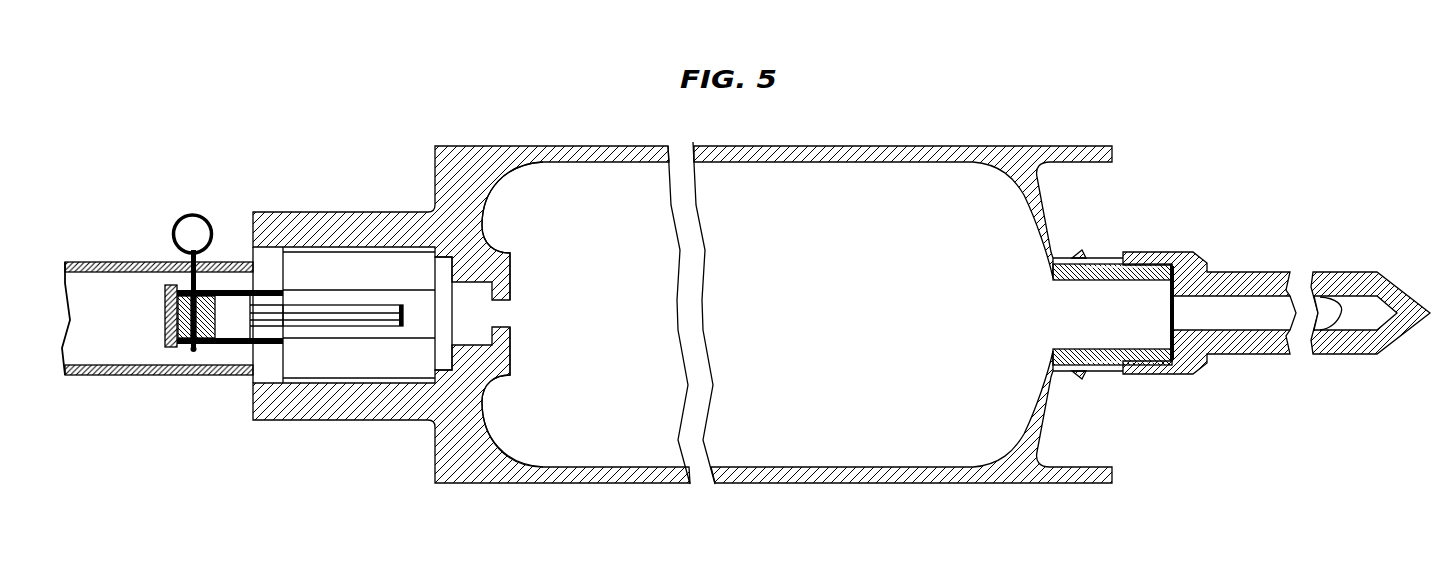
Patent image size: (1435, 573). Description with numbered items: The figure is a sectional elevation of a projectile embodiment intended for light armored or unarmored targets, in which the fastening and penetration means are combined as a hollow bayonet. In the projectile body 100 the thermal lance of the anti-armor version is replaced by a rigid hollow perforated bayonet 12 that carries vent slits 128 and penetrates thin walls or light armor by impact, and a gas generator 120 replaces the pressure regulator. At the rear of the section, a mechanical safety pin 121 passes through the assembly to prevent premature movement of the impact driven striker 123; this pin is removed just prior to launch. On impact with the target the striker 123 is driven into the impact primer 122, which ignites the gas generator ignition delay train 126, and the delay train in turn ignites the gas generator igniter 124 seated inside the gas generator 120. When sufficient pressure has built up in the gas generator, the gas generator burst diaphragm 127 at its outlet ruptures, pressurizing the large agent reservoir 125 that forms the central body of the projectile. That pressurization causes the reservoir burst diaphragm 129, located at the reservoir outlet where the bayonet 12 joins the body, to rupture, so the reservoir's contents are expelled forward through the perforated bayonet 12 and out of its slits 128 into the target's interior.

The projectile body 100 is at (880, 121).
The rigid hollow perforated bayonet 12 is at (1259, 301).
The gas generator 120 is at (368, 367).
The mechanical safety pin 121 is at (184, 254).
The impact primer 122 is at (253, 324).
The impact driven striker 123 is at (215, 298).
The gas generator igniter 124 is at (378, 312).
The agent reservoir 125 is at (590, 443).
The gas generator ignition delay train 126 is at (271, 312).
The gas generator burst diaphragm 127 is at (438, 352).
The vent slits 128 is at (1324, 295).
The reservoir burst diaphragm 129 is at (1168, 313).